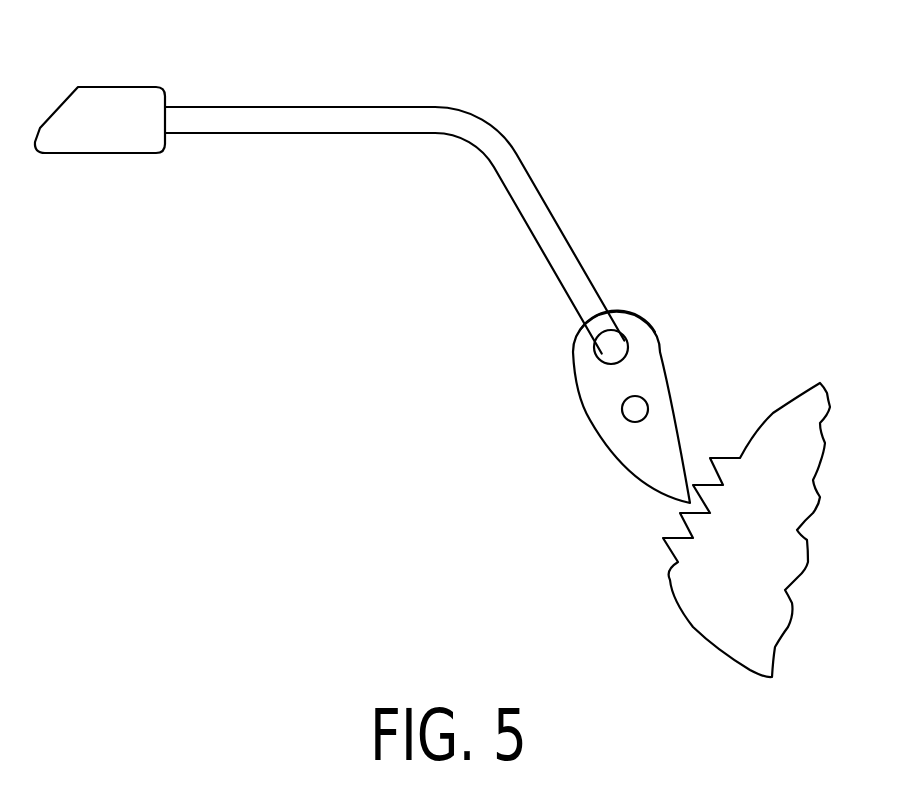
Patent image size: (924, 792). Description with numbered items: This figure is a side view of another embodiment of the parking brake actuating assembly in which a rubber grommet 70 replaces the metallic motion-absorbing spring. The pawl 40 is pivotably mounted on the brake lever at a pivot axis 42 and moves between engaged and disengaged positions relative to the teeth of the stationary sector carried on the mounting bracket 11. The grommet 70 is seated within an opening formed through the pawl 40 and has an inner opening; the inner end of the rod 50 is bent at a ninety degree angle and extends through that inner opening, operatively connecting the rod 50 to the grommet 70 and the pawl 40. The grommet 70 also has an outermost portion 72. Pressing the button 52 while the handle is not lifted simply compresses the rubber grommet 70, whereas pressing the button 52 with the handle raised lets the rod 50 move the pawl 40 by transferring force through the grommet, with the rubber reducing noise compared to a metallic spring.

The mounting bracket 11 is at (795, 505).
The pawl 40 is at (660, 385).
The pivot axis 42 is at (632, 409).
The rod 50 is at (527, 198).
The button 52 is at (138, 87).
The rubber grommet 70 is at (632, 353).
The outermost portion of the grommet 72 is at (620, 318).